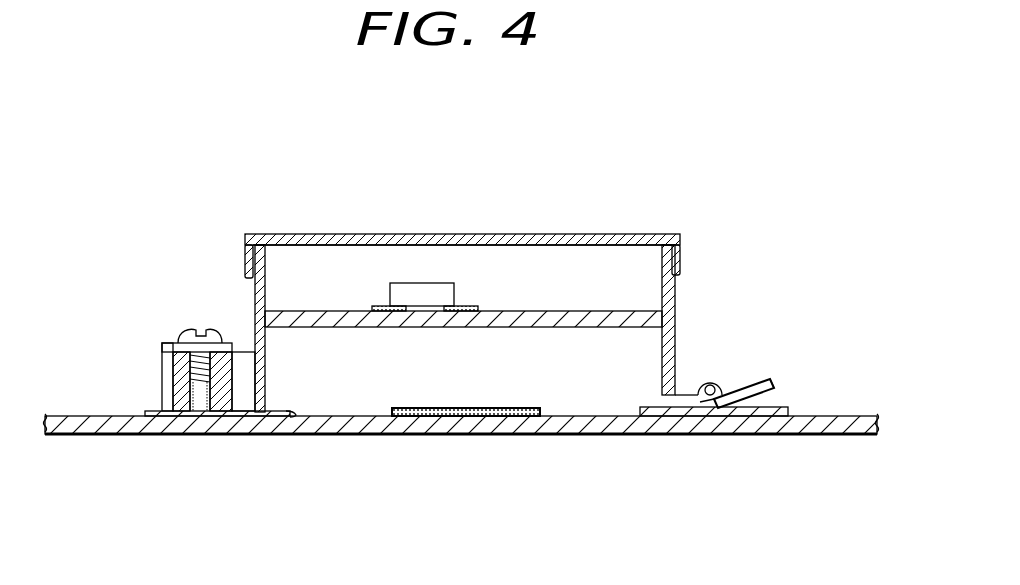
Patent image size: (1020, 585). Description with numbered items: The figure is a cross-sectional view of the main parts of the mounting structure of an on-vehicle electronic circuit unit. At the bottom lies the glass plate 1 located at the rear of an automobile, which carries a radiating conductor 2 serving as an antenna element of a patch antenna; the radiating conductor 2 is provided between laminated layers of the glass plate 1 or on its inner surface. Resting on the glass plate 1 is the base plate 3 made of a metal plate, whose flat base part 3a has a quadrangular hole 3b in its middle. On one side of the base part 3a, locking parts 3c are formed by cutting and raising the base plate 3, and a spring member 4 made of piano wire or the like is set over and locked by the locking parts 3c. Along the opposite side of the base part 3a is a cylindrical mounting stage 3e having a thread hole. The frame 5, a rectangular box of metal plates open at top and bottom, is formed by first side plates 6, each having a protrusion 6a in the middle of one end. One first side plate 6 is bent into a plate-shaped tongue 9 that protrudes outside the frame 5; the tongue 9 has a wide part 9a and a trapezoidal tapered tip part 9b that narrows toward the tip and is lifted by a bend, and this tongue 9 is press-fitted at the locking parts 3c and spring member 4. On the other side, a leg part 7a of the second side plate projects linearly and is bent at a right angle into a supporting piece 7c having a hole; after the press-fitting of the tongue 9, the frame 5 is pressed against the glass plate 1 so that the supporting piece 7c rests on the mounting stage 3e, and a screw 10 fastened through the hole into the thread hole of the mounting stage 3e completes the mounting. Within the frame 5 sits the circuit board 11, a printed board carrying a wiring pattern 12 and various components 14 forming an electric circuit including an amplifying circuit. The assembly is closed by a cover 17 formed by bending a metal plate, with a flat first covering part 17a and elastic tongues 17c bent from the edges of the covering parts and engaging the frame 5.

The glass plate 1 is at (385, 436).
The radiating conductor 2 is at (480, 408).
The base plate 3 is at (481, 407).
The base part 3a is at (145, 412).
The quadrangular hole 3b is at (300, 420).
The locking part 3c is at (793, 402).
The mounting stage 3e is at (162, 352).
The spring member 4 is at (707, 385).
The frame 5 is at (437, 270).
The first side plate 6 is at (266, 365).
The protrusion 6a is at (276, 258).
The leg part 7a is at (244, 353).
The supporting piece 7c is at (172, 343).
The tongue 9 is at (750, 379).
The wide part 9a is at (688, 400).
The tapered tip part 9b is at (762, 370).
The screw 10 is at (203, 412).
The circuit board 11 is at (558, 311).
The wiring pattern 12 is at (466, 306).
The component 14 is at (423, 292).
The cover 17 is at (513, 187).
The first covering part 17a is at (541, 235).
The elastic tongue 17c is at (683, 252).